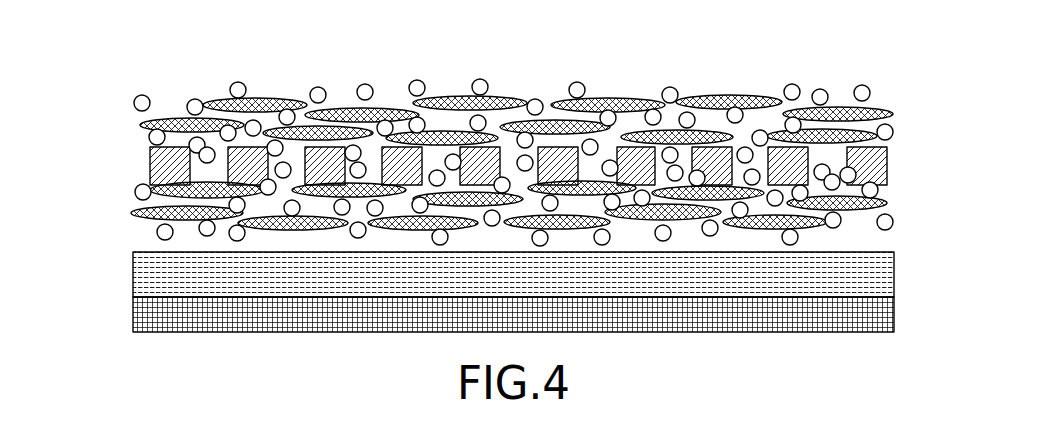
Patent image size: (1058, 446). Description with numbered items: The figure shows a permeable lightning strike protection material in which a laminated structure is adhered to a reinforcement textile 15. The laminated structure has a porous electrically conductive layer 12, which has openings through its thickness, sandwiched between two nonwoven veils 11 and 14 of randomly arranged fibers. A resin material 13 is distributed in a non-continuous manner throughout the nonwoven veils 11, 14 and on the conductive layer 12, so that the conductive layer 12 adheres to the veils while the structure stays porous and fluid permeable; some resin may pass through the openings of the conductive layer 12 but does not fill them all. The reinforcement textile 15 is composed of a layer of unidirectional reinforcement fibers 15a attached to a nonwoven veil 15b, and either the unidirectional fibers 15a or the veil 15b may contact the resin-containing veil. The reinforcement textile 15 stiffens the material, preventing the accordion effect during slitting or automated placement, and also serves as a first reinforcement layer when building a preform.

The nonwoven veil 11 is at (902, 83).
The porous electrically conductive layer 12 is at (888, 165).
The resin material 13 is at (806, 80).
The nonwoven veil 14 is at (902, 185).
The reinforcement textile 15 is at (495, 275).
The unidirectional reinforcement fibers 15a is at (130, 268).
The nonwoven veil 15b is at (130, 315).